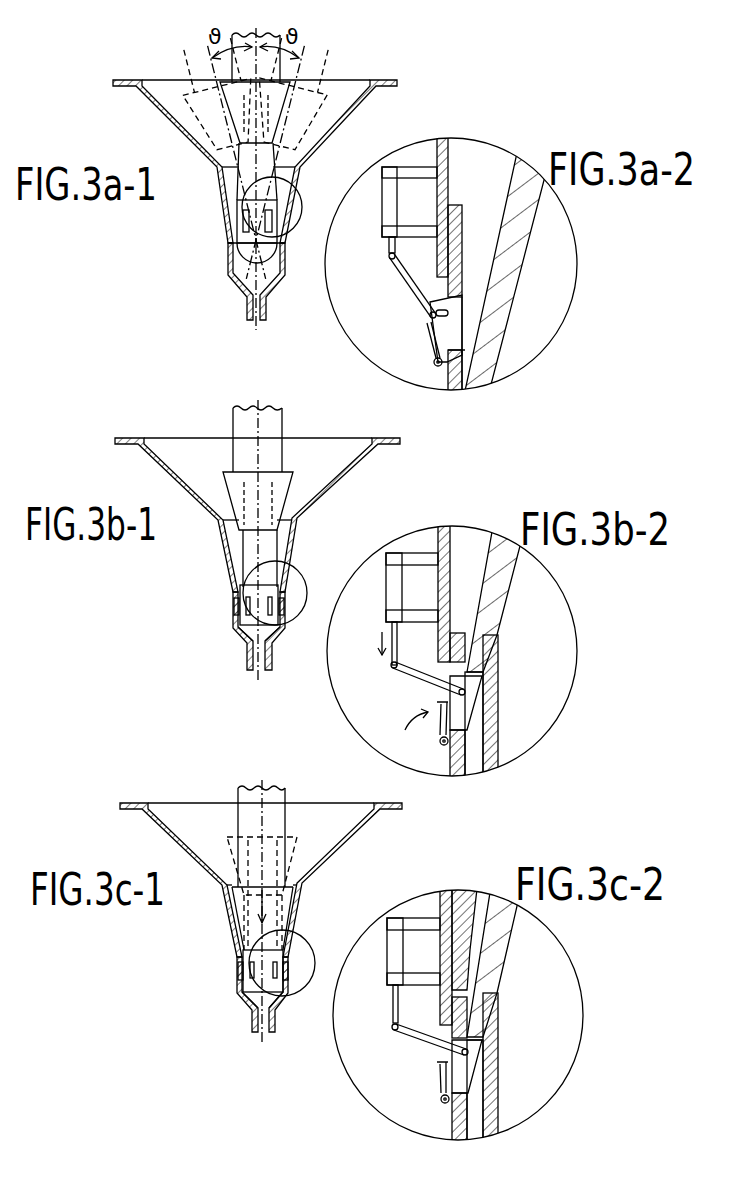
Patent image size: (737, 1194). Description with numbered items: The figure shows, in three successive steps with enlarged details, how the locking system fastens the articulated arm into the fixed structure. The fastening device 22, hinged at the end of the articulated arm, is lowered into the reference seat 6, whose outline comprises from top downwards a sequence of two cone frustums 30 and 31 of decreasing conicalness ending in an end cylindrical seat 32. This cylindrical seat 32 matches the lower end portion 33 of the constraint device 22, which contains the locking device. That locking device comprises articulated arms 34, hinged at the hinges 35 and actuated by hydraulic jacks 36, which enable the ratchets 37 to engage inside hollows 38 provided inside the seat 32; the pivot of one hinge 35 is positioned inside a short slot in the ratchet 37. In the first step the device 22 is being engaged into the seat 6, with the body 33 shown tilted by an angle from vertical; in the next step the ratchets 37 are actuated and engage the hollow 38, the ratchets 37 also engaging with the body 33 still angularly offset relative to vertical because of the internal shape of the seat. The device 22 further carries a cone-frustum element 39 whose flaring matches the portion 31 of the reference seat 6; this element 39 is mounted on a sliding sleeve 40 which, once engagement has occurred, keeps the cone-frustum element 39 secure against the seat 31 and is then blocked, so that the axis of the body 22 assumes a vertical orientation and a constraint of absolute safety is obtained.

In FIG. 3A1, the reference seat 6 is at (165, 115).
In FIG. 3A2, the reference seat 6 is at (520, 222).
In FIG. 3B1, the reference seat 6 is at (175, 483).
In FIG. 3B2, the reference seat 6 is at (500, 588).
In FIG. 3C1, the reference seat 6 is at (180, 850).
In FIG. 3C2, the reference seat 6 is at (493, 965).
In FIG. 3B1, the fastening device 22 is at (240, 425).
In FIG. 3C1, the fastening device 22 is at (248, 795).
In FIG. 3A1, the cone frustum 30 is at (255, 161).
In FIG. 3B1, the cone frustum 30 is at (257, 515).
In FIG. 3C1, the cone frustum 30 is at (261, 880).
In FIG. 3A1, the cone frustum 31 is at (219, 183).
In FIG. 3B1, the cone frustum 31 is at (295, 540).
In FIG. 3C1, the cone frustum 31 is at (297, 920).
In FIG. 3A1, the end cylindrical seat 32 is at (228, 280).
In FIG. 3B1, the end cylindrical seat 32 is at (234, 628).
In FIG. 3B2, the end cylindrical seat 32 is at (490, 757).
In FIG. 3C1, the end cylindrical seat 32 is at (237, 995).
In FIG. 3C2, the end cylindrical seat 32 is at (490, 1050).
In FIG. 3A1, the lower end portion 33 is at (237, 235).
In FIG. 3A2, the lower end portion 33 is at (445, 192).
In FIG. 3B1, the lower end portion 33 is at (248, 640).
In FIG. 3B2, the lower end portion 33 is at (447, 582).
In FIG. 3C1, the lower end portion 33 is at (255, 1015).
In FIG. 3C2, the lower end portion 33 is at (453, 959).
In FIG. 3A2, the articulated arms 34 is at (405, 282).
In FIG. 3B2, the articulated arms 34 is at (415, 684).
In FIG. 3C2, the articulated arms 34 is at (423, 1035).
In FIG. 3A2, the hinges 35 is at (389, 255).
In FIG. 3B2, the hinges 35 is at (390, 667).
In FIG. 3C2, the hinges 35 is at (430, 1063).
In FIG. 3A2, the hydraulic jacks 36 is at (388, 208).
In FIG. 3B2, the hydraulic jacks 36 is at (388, 593).
In FIG. 3C2, the hydraulic jacks 36 is at (393, 953).
In FIG. 3A2, the ratchets 37 is at (455, 320).
In FIG. 3B2, the ratchets 37 is at (470, 703).
In FIG. 3C2, the ratchets 37 is at (463, 1068).
In FIG. 3B2, the hollows 38 is at (478, 718).
In FIG. 3C2, the hollows 38 is at (477, 1083).
In FIG. 3A1, the cone-frustum element 39 is at (276, 108).
In FIG. 3B1, the cone-frustum element 39 is at (285, 482).
In FIG. 3C1, the cone-frustum element 39 is at (245, 925).
In FIG. 3C2, the cone-frustum element 39 is at (463, 950).
In FIG. 3A1, the sliding sleeve 40 is at (233, 66).
In FIG. 3B1, the sliding sleeve 40 is at (250, 549).